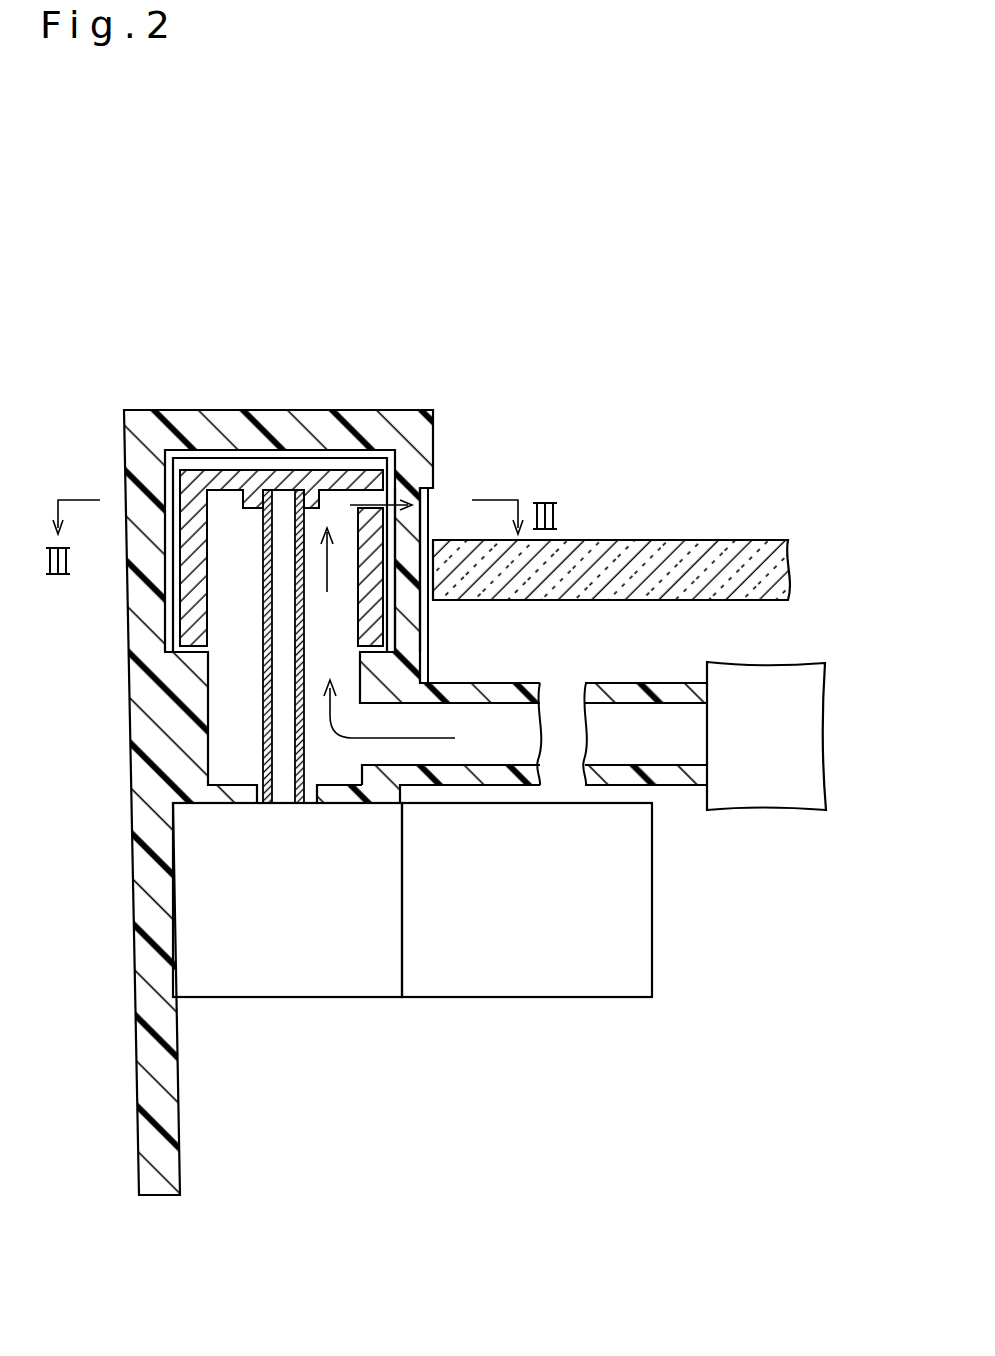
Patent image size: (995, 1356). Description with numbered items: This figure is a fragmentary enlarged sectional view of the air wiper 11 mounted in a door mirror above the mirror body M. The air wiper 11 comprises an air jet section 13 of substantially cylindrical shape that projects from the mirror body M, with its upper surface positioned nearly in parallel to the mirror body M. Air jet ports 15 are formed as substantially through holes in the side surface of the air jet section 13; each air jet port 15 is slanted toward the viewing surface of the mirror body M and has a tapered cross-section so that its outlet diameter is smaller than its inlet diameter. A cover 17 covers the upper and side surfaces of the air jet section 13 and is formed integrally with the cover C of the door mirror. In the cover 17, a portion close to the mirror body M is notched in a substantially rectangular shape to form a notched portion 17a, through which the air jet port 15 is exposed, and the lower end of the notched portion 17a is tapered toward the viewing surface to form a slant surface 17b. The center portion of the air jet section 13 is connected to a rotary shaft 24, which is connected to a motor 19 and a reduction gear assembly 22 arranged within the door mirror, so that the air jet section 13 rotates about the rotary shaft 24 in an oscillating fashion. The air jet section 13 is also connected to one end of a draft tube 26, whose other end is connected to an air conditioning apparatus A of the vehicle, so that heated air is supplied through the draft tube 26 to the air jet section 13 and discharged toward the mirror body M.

The air wiper 11 is at (115, 356).
The air jet section 13 is at (301, 486).
The air jet port 15 is at (185, 503).
The cover 17 is at (140, 610).
The notched portion 17a is at (425, 493).
The slant surface 17b is at (422, 498).
The motor 19 is at (543, 965).
The reduction gear assembly 22 is at (287, 965).
The rotary shaft 24 is at (307, 620).
The draft tube 26 is at (497, 718).
The mirror body M is at (690, 555).
The air conditioning apparatus A is at (750, 797).
The cover of the door mirror C is at (157, 1051).